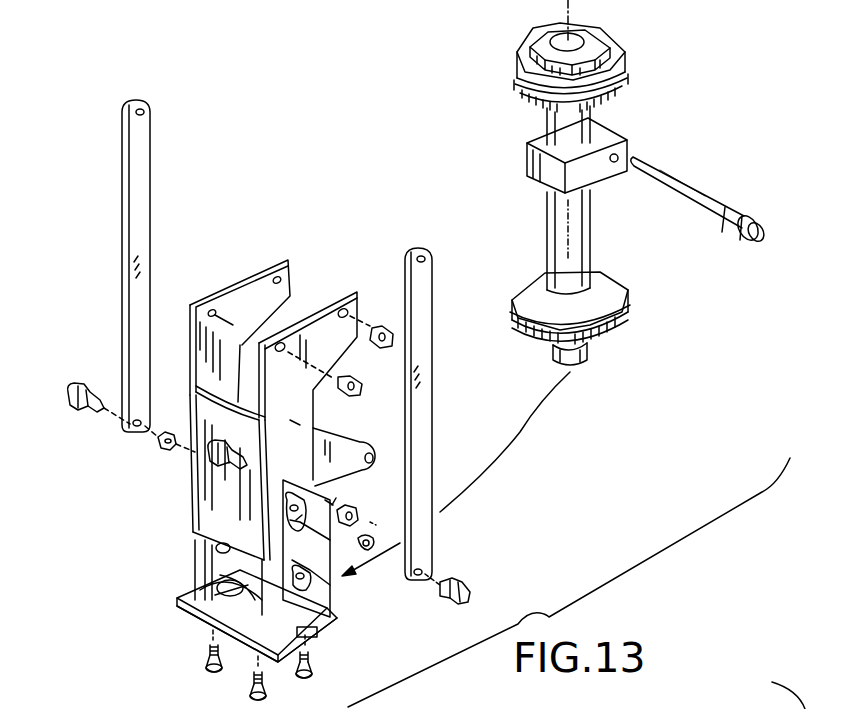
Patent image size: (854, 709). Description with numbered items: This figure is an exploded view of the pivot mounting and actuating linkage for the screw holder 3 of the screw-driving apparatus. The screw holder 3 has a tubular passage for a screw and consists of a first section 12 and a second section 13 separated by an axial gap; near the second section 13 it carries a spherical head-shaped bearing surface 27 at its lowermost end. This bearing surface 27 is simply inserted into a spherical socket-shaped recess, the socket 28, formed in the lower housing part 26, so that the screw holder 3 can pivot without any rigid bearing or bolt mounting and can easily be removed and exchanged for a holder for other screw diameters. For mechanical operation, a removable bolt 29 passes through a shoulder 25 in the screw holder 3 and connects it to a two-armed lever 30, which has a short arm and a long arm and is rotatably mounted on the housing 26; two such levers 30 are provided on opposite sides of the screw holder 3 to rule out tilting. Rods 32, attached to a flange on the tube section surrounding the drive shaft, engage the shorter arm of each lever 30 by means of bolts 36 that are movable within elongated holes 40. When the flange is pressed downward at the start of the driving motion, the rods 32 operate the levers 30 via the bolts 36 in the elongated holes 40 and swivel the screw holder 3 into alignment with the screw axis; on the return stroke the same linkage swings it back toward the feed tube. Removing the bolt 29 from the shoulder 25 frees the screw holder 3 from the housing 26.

The screw holder 3 is at (585, 249).
The first section 12 is at (627, 37).
The second section 13 is at (620, 328).
The shoulder 25 is at (625, 146).
The lower housing part 26 is at (185, 492).
The bearing surface 27 is at (584, 370).
The socket 28 is at (200, 603).
The bolt 29 is at (688, 198).
The two-armed lever 30 is at (367, 445).
The rods 32 is at (146, 176).
The bolts 36 is at (75, 384).
The elongated holes 40 is at (297, 520).